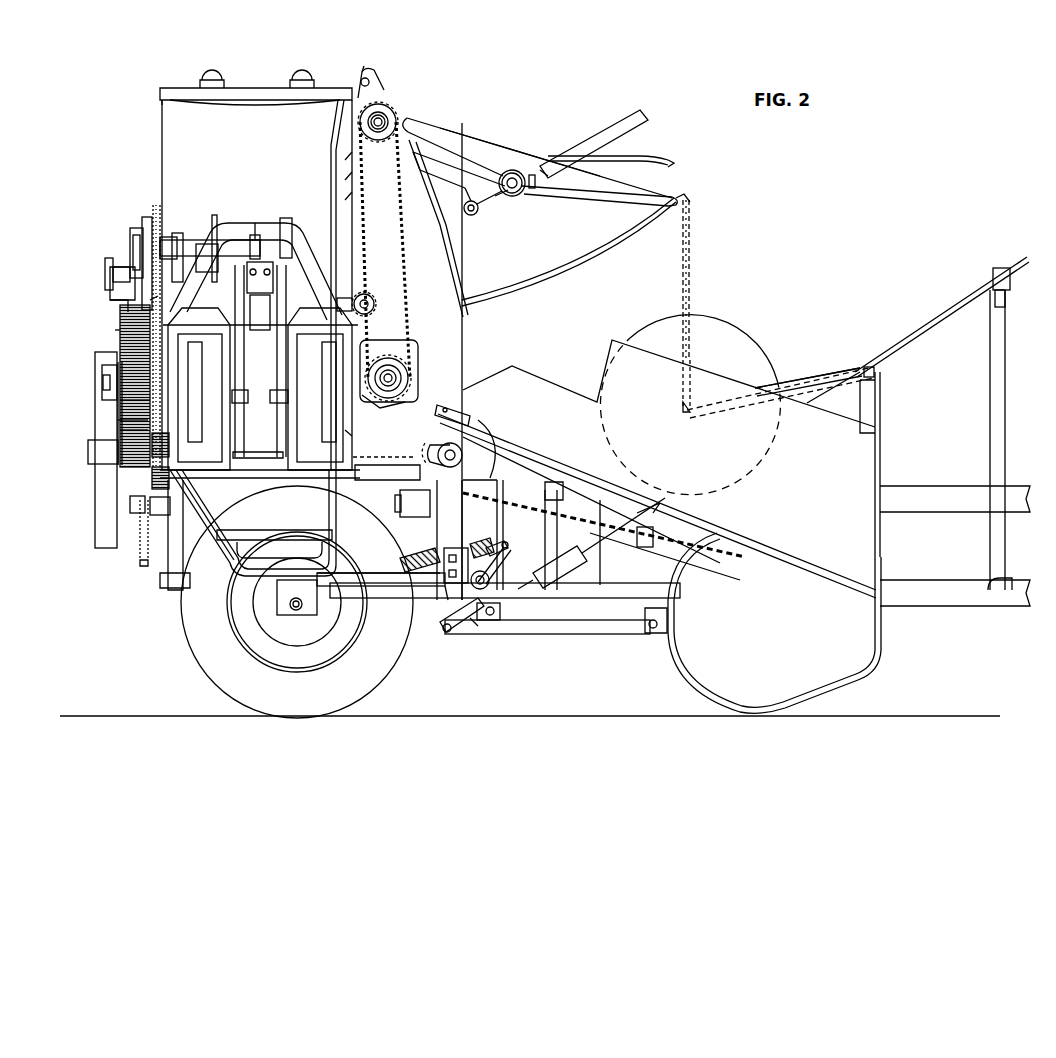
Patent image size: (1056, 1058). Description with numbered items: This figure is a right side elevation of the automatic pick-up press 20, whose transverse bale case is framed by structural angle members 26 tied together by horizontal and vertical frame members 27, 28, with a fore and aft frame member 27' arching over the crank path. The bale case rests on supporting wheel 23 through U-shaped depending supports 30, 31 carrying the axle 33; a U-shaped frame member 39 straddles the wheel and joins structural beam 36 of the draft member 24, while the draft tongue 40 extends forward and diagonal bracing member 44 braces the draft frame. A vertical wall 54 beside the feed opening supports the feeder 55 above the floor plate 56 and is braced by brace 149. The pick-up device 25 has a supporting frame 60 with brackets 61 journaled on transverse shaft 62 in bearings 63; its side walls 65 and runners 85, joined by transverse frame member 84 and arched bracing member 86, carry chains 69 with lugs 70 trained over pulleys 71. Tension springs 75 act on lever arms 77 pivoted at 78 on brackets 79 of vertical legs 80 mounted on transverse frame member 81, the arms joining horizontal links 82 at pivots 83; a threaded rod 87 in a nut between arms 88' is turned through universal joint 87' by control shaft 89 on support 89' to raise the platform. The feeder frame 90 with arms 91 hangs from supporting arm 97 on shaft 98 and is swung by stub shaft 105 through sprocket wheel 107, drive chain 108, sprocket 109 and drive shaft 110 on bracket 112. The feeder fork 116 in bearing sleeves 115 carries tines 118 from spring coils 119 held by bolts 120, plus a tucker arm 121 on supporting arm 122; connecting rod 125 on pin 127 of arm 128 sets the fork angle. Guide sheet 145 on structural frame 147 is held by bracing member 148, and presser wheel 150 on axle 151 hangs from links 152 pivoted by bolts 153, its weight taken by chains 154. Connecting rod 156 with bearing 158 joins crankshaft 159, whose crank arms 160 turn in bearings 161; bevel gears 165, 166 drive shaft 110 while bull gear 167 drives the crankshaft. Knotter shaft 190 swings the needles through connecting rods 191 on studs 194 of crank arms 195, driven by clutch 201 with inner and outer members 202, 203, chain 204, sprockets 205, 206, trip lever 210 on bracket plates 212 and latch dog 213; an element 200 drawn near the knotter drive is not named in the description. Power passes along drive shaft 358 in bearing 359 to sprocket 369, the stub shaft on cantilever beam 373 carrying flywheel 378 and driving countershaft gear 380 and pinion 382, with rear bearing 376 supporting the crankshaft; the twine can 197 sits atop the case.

The automatic pick-up press 20 is at (106, 171).
The supporting wheel 23 is at (207, 652).
The draft member 24 is at (921, 564).
The pick-up device 25 is at (811, 373).
The structural angle member 26 is at (120, 338).
The horizontal frame member 27 is at (234, 515).
The fore and aft extending frame member 27' is at (258, 208).
The vertical frame member 28 is at (125, 430).
The depending support 30 is at (173, 563).
The depending support 31 is at (330, 523).
The axle 33 is at (294, 612).
The structural beam 36 is at (520, 592).
The U-shaped frame member 39 is at (382, 580).
The draft tongue 40 is at (942, 592).
The diagonal bracing member 44 is at (552, 470).
The vertical wall 54 is at (450, 352).
The feeder 55 is at (549, 130).
The floor plate 56 is at (425, 452).
The supporting frame 60 is at (587, 473).
The bracket 61 is at (453, 440).
The transverse shaft 62 is at (455, 495).
The bearing 63 is at (430, 462).
The side wall 65 is at (779, 458).
The chain 69 is at (597, 528).
The lug 70 is at (645, 547).
The pulley 71 is at (487, 458).
The tension spring 75 is at (415, 556).
The lever arm 77 is at (495, 560).
The pivot 78 is at (500, 610).
The bracket 79 is at (463, 560).
The vertical leg 80 is at (500, 542).
The transverse frame member 81 is at (436, 590).
The horizontal link 82 is at (525, 634).
The pivot 83 is at (648, 630).
The transverse frame member 84 is at (668, 616).
The runner 85 is at (670, 665).
The arched bracing member 86 is at (866, 420).
The threaded rod 87 is at (488, 639).
The universal joint 87' is at (591, 543).
The arm 88' is at (458, 630).
The control shaft 89 is at (942, 317).
The support 89' is at (978, 429).
The feeder frame 90 is at (459, 146).
The arm 91 is at (480, 167).
The supporting arm 97 is at (372, 86).
The shaft 98 is at (362, 72).
The stub shaft 105 is at (380, 134).
The sprocket wheel 107 is at (392, 114).
The drive chain 108 is at (405, 214).
The sprocket 109 is at (410, 352).
The drive shaft 110 is at (404, 374).
The bracket 112 is at (388, 365).
The bearing sleeve 115 is at (512, 172).
The feeder fork 116 is at (679, 165).
The tine 118 is at (645, 153).
The spring coil 119 is at (532, 188).
The bolt 120 is at (514, 196).
The tucker arm 121 is at (618, 118).
The supporting arm 122 is at (502, 200).
The connecting rod 125 is at (440, 175).
The pin 127 is at (468, 215).
The arm 128 is at (482, 212).
The guide sheet 145 is at (568, 273).
The structural frame 147 is at (533, 287).
The bracing member 148 is at (612, 192).
The brace 149 is at (330, 150).
The presser wheel 150 is at (728, 345).
The axle 151 is at (680, 400).
The link 152 is at (778, 383).
The bolt 153 is at (876, 374).
The chain 154 is at (690, 232).
The connecting rod 156 is at (358, 294).
The connecting rod bearing 158 is at (284, 242).
The crankshaft 159 is at (103, 380).
The crank arm 160 is at (277, 367).
The bearing 161 is at (195, 390).
The bevel gear 165 is at (395, 402).
The bevel gear 166 is at (400, 380).
The bull gear 167 is at (148, 403).
The knotter shaft 190 is at (233, 252).
The connecting rod 191 is at (110, 305).
The stud 194 is at (115, 276).
The crank arm 195 is at (128, 264).
The twine can 197 is at (170, 118).
The collar 200 is at (207, 227).
The self-interrupting clutch mechanism 201 is at (148, 206).
The inner clutch member 202 is at (132, 230).
The outer clutch member 203 is at (138, 223).
The drive chain 204 is at (176, 244).
The sprocket 205 is at (158, 245).
The sprocket 206 is at (137, 423).
The trip lever 210 is at (120, 293).
The bracket plate 212 is at (115, 333).
The latch dog 213 is at (142, 300).
The drive shaft 358 is at (380, 506).
The bearing 359 is at (143, 530).
The sprocket 369 is at (146, 566).
The cantilever beam 373 is at (100, 455).
The rear bearing 376 is at (107, 388).
The flywheel 378 is at (115, 355).
The countershaft gear 380 is at (152, 507).
The countershaft pinion 382 is at (123, 472).